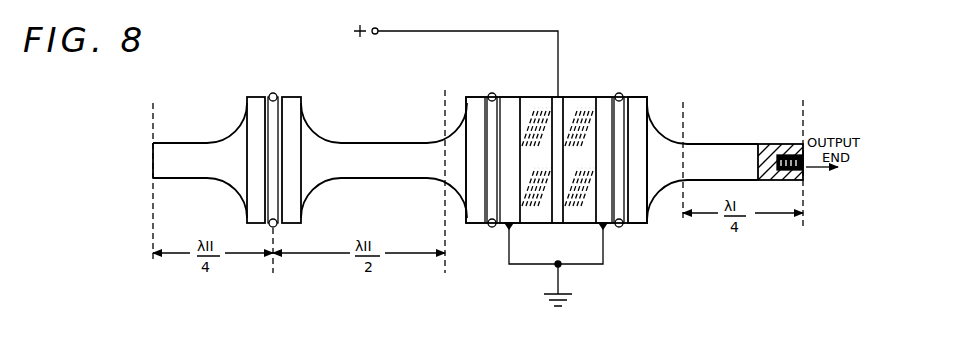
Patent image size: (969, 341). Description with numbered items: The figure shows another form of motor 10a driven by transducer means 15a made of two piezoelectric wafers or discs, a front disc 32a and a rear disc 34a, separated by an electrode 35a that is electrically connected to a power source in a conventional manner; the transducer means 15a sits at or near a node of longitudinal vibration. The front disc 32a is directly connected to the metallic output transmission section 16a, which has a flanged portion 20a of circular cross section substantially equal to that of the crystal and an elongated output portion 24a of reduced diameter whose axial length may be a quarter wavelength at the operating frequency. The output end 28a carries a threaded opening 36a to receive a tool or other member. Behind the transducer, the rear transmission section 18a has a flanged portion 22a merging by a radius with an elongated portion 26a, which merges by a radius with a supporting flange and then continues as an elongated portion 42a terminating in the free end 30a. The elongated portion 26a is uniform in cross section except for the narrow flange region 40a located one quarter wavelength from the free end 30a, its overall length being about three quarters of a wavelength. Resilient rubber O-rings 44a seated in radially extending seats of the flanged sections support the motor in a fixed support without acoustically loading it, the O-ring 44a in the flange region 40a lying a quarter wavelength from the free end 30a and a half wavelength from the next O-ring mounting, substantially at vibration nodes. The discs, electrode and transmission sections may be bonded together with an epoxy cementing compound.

The motor 10a is at (610, 85).
The transducer means 15a is at (547, 92).
The output transmission section 16a is at (658, 122).
The rear transmission section 18a is at (372, 142).
The flanged portion 20a is at (637, 103).
The flanged portion 22a is at (473, 222).
The elongated output portion 24a is at (713, 152).
The elongated portion 26a is at (407, 168).
The output end 28a is at (802, 136).
The free end 30a is at (152, 154).
The front disc 32a is at (580, 97).
The rear disc 34a is at (530, 96).
The electrode 35a is at (558, 225).
The threaded opening 36a is at (804, 170).
The narrow flange region 40a is at (293, 99).
The elongated portion 42a is at (178, 152).
The O-ring 44a is at (270, 94).